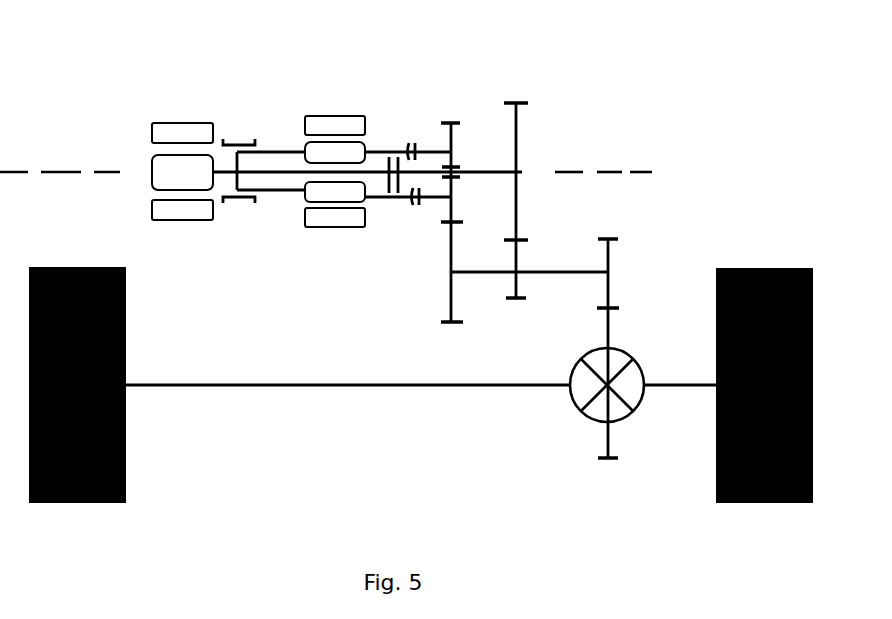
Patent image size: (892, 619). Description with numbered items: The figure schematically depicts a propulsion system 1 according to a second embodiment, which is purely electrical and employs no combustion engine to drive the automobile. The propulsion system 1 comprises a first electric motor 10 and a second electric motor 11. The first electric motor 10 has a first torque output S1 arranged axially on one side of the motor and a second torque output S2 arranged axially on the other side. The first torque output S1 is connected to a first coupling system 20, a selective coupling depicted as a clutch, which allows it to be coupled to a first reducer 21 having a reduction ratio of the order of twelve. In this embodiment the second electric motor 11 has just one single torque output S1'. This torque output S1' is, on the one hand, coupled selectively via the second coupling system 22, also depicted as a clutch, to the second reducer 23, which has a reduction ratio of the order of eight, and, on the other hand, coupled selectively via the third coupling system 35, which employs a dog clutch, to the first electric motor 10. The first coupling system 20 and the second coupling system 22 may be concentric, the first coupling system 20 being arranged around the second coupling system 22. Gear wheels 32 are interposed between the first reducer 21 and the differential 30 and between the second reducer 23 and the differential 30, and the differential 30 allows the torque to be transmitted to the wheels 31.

The propulsion system 1 is at (102, 90).
The first electric motor 10 is at (342, 220).
The second electric motor 11 is at (195, 218).
The first coupling system 20 is at (417, 143).
The first reducer 21 is at (462, 152).
The second coupling system 22 is at (396, 194).
The second reducer 23 is at (523, 150).
The differential 30 is at (592, 413).
The wheels 31 is at (126, 345).
The gear wheels 32 is at (613, 260).
The third coupling system 35 is at (247, 137).
The first torque output S1 is at (391, 128).
The first torque output of the second electric motor S1' is at (275, 129).
The second torque output S2 is at (287, 152).